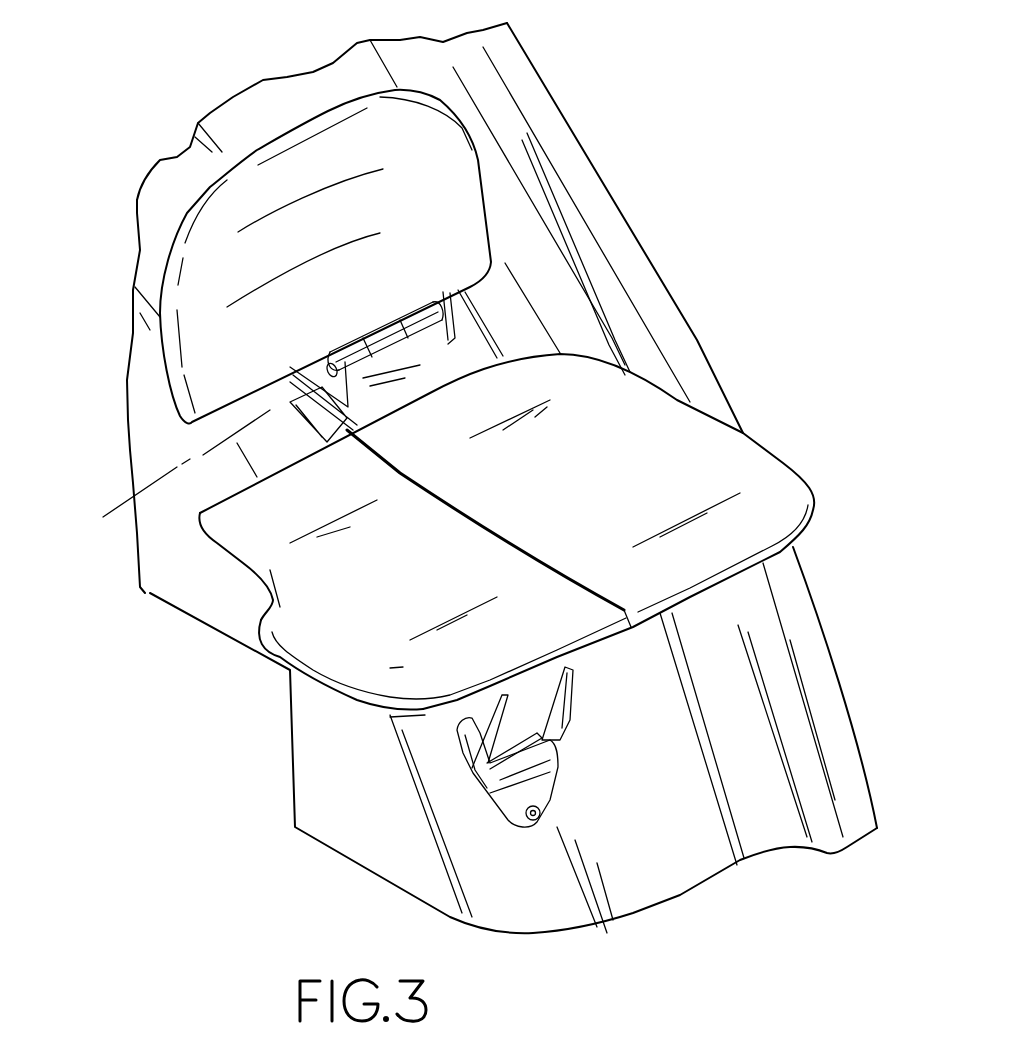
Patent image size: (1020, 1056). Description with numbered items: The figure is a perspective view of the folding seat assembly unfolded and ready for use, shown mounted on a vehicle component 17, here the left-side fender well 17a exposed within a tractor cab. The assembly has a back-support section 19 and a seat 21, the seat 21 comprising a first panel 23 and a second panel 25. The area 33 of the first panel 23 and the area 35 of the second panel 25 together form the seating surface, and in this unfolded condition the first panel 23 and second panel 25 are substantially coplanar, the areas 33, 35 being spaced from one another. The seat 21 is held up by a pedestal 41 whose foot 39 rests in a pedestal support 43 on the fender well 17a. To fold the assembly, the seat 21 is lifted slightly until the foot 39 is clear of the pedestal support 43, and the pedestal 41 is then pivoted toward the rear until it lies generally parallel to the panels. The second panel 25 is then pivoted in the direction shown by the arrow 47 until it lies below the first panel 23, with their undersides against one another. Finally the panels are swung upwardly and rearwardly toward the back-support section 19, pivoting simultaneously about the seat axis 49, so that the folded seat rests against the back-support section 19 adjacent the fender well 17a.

The vehicle component 17 is at (828, 576).
The fender well 17a is at (738, 673).
The back-support section 19 is at (460, 163).
The seat 21 is at (741, 432).
The first panel 23 is at (610, 425).
The second panel 25 is at (268, 612).
The area of the first panel 33 is at (790, 467).
The area of the second panel 35 is at (407, 667).
The foot 39 is at (540, 735).
The pedestal 41 is at (542, 690).
The pedestal support 43 is at (552, 778).
The arrow 47 is at (383, 537).
The seat axis 49 is at (503, 258).